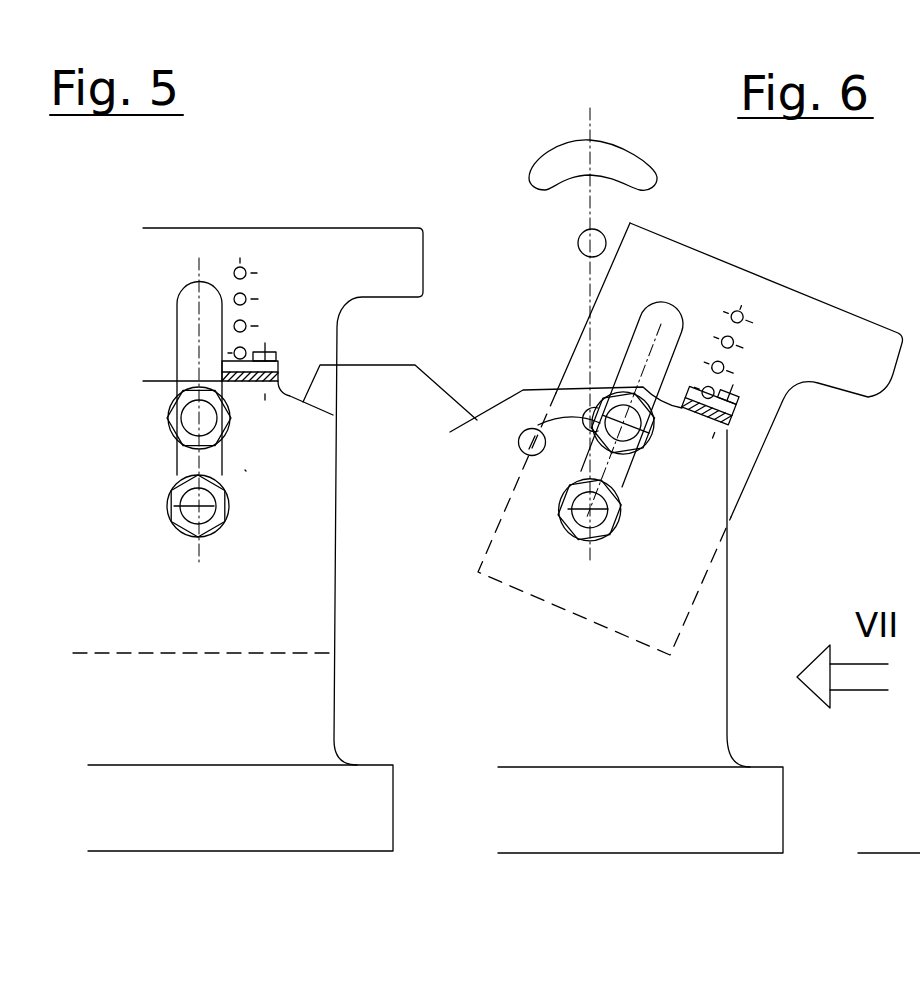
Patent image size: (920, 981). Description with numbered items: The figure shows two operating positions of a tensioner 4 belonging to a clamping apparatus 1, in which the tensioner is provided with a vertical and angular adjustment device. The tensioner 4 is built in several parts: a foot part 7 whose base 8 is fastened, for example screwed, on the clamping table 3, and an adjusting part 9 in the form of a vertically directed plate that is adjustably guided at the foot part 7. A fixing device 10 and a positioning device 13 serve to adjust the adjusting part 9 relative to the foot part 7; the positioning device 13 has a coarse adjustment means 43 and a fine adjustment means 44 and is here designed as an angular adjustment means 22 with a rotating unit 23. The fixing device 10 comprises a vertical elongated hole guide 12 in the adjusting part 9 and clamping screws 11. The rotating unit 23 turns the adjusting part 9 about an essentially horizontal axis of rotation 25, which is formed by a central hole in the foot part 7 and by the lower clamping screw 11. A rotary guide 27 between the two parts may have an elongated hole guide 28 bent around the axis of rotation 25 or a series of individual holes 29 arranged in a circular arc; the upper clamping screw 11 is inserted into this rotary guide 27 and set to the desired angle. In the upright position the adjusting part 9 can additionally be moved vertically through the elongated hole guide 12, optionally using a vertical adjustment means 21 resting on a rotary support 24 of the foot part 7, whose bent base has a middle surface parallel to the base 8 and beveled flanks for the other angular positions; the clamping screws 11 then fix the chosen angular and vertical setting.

In FIG. 5, the clamping apparatus 1 is at (280, 465).
In FIG. 5, the tensioner 4 is at (383, 203).
In FIG. 6, the clamping table 3 is at (892, 852).
In FIG. 5, the foot part 7 is at (282, 713).
In FIG. 6, the foot part 7 is at (713, 645).
In FIG. 5, the base 8 is at (357, 803).
In FIG. 5, the adjusting part 9 is at (270, 453).
In FIG. 6, the adjusting part 9 is at (768, 402).
In FIG. 5, the fixing device 10 is at (165, 359).
In FIG. 5, the clamping screws 11 is at (199, 418).
In FIG. 6, the clamping screws 11 is at (643, 443).
In FIG. 5, the elongated hole guide 12 is at (178, 297).
In FIG. 6, the elongated hole guide 12 is at (628, 410).
In FIG. 5, the positioning device 13 is at (343, 374).
In FIG. 6, the positioning device 13 is at (793, 333).
In FIG. 5, the vertical adjustment means 21 is at (314, 248).
In FIG. 6, the vertical adjustment means 21 is at (793, 333).
In FIG. 5, the angular adjustment means 22 is at (353, 561).
In FIG. 5, the rotating unit 23 is at (353, 561).
In FIG. 5, the rotary support 24 is at (390, 375).
In FIG. 5, the axis of rotation 25 is at (166, 520).
In FIG. 6, the axis of rotation 25 is at (583, 241).
In FIG. 6, the rotary guide 27 is at (535, 393).
In FIG. 6, the elongated hole guide 28 is at (603, 134).
In FIG. 6, the individual holes 29 is at (505, 461).
In FIG. 5, the coarse adjustment means 43 is at (314, 248).
In FIG. 6, the coarse adjustment means 43 is at (793, 333).
In FIG. 5, the fine adjustment means 44 is at (265, 238).
In FIG. 6, the fine adjustment means 44 is at (758, 298).